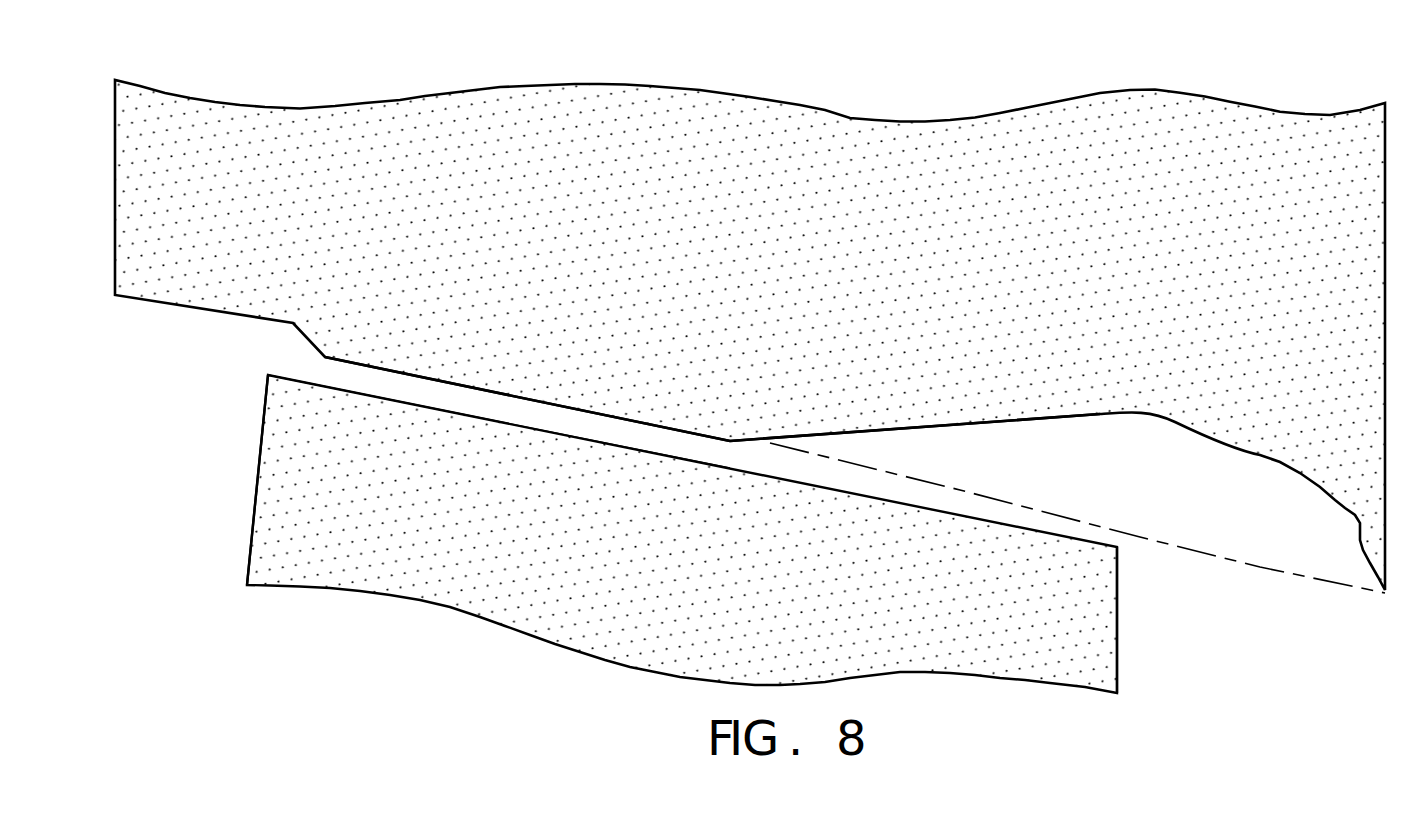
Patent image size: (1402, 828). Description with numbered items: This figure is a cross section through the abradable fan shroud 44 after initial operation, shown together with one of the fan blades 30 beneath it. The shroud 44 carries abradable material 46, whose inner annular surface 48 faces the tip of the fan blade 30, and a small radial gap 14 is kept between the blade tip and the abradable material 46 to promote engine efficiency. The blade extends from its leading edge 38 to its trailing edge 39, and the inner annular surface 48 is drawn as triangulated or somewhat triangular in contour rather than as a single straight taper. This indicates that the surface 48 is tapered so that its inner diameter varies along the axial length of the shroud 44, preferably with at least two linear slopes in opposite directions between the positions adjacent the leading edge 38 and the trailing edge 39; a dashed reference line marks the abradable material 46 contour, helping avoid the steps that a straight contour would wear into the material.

The radial gap 14 is at (315, 366).
The fan blade 30 is at (400, 598).
The leading edge 38 is at (254, 509).
The trailing edge 39 is at (1117, 648).
The abradable fan shroud 44 is at (74, 95).
The abradable material 46 is at (1013, 525).
The inner annular surface 48 is at (997, 425).